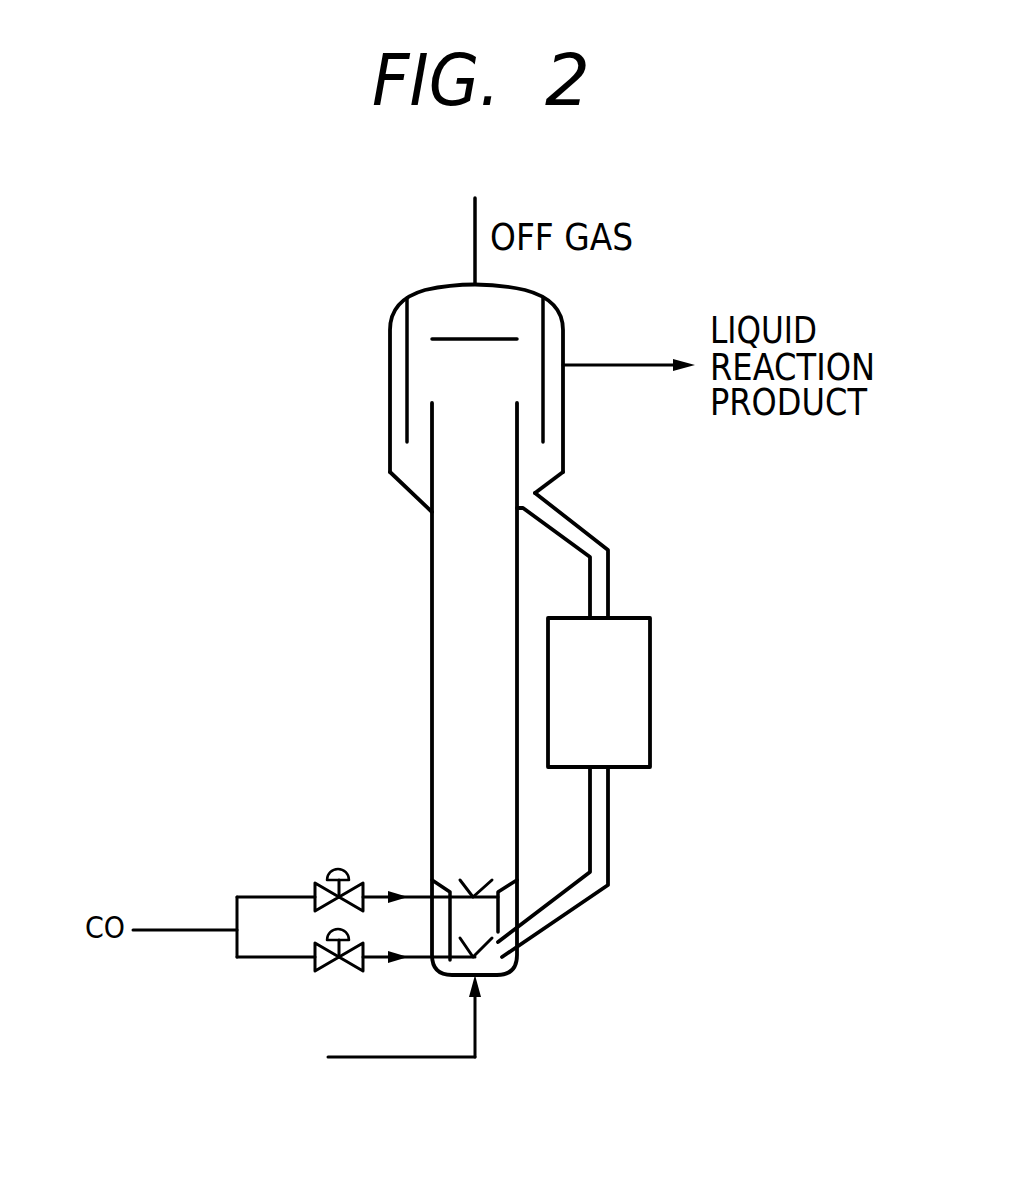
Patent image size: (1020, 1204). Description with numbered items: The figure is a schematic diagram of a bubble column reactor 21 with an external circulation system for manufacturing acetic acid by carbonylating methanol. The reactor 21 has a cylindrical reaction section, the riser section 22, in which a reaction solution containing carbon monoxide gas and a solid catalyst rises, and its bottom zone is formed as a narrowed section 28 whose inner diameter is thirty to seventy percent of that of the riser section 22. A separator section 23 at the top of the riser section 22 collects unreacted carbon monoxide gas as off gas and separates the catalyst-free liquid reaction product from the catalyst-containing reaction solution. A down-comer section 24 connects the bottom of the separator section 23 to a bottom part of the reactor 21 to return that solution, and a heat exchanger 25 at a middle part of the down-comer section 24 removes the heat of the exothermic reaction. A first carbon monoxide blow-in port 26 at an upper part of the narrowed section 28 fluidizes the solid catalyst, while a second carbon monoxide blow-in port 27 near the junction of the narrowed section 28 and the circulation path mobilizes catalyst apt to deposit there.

The reactor 21 is at (403, 596).
The riser section 22 is at (442, 703).
The separator section 23 is at (402, 394).
The down-comer section 24 is at (585, 540).
The heat exchanger 25 is at (633, 613).
The first carbon monoxide blow-in port 26 is at (476, 898).
The second carbon monoxide blow-in port 27 is at (482, 975).
The narrowed section 28 is at (443, 924).